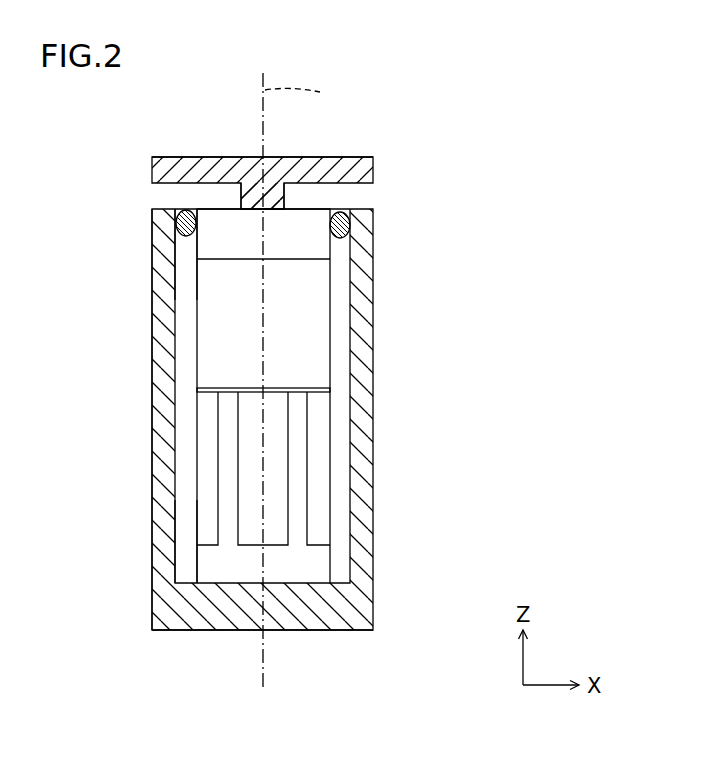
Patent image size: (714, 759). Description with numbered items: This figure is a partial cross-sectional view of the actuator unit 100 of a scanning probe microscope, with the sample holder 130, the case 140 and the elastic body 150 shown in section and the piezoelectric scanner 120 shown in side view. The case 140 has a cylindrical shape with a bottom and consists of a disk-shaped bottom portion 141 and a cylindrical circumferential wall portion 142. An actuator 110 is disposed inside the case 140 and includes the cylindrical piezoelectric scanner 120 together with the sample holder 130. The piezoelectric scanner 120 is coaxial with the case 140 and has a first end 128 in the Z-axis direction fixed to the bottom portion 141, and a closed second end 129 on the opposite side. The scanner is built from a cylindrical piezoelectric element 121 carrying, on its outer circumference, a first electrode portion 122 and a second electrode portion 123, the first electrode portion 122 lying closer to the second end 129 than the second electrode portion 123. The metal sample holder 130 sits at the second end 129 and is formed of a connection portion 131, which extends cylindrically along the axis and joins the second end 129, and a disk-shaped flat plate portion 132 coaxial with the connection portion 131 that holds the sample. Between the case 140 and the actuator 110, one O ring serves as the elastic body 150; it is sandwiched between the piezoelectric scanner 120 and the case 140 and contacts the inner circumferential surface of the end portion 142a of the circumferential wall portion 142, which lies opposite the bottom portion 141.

The actuator unit 100 is at (434, 124).
The actuator 110 is at (313, 334).
The piezoelectric scanner 120 is at (355, 396).
The piezoelectric element 121 is at (330, 394).
The first electrode portion 122 is at (300, 358).
The second electrode portion 123 is at (327, 468).
The first end 128 is at (217, 578).
The second end 129 is at (217, 216).
The sample holder 130 is at (287, 147).
The connection portion 131 is at (239, 197).
The flat plate portion 132 is at (172, 156).
The case 140 is at (306, 645).
The bottom portion 141 is at (233, 633).
The circumferential wall portion 142 is at (254, 458).
The end portion 142a is at (150, 224).
The elastic body 150 is at (346, 224).